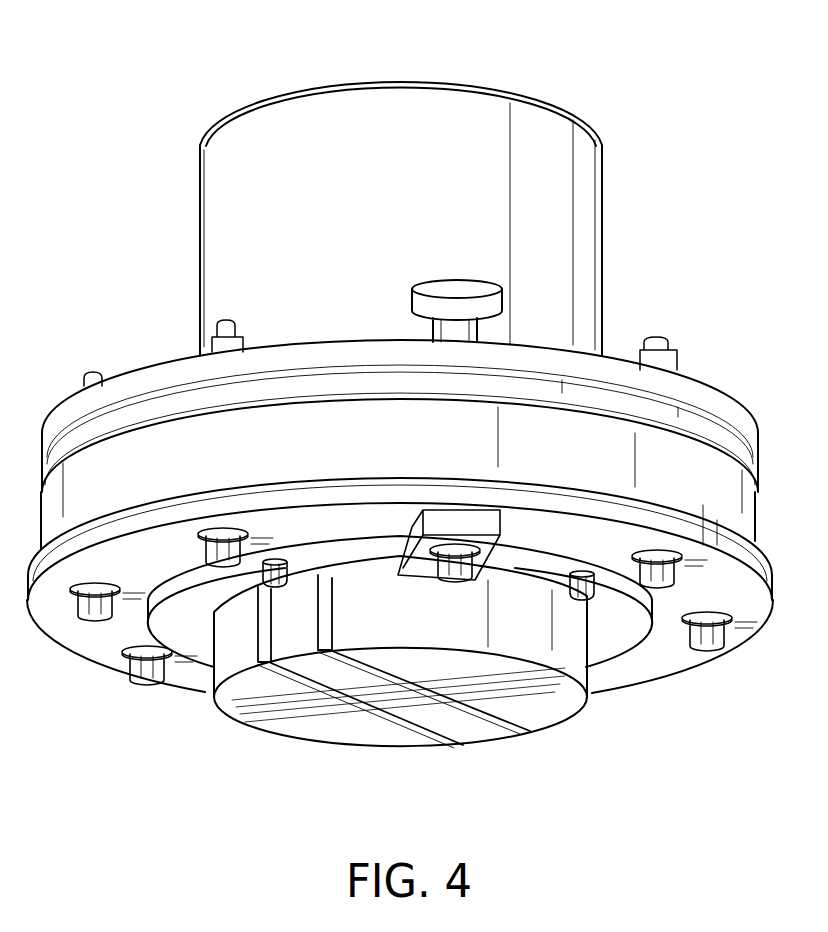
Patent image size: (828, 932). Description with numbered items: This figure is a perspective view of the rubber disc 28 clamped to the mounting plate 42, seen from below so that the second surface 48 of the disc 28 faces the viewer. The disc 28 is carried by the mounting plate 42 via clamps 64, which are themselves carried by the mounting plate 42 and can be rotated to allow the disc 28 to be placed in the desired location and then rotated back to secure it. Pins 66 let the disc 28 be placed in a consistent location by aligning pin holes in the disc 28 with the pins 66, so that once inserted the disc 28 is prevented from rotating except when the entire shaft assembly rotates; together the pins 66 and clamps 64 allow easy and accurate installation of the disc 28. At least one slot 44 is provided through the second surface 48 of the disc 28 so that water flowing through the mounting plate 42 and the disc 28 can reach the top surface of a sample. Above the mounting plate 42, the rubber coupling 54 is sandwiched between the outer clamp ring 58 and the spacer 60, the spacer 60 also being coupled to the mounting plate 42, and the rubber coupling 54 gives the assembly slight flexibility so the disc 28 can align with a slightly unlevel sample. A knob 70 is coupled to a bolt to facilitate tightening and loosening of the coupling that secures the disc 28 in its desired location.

The disc 28 is at (513, 620).
The mounting plate 42 is at (680, 520).
The slot 44 is at (531, 733).
The second surface 48 is at (270, 695).
The rubber coupling 54 is at (155, 400).
The outer clamp ring 58 is at (190, 360).
The spacer 60 is at (606, 425).
The clamps 64 is at (492, 530).
The pins 66 is at (207, 600).
The knob 70 is at (480, 281).